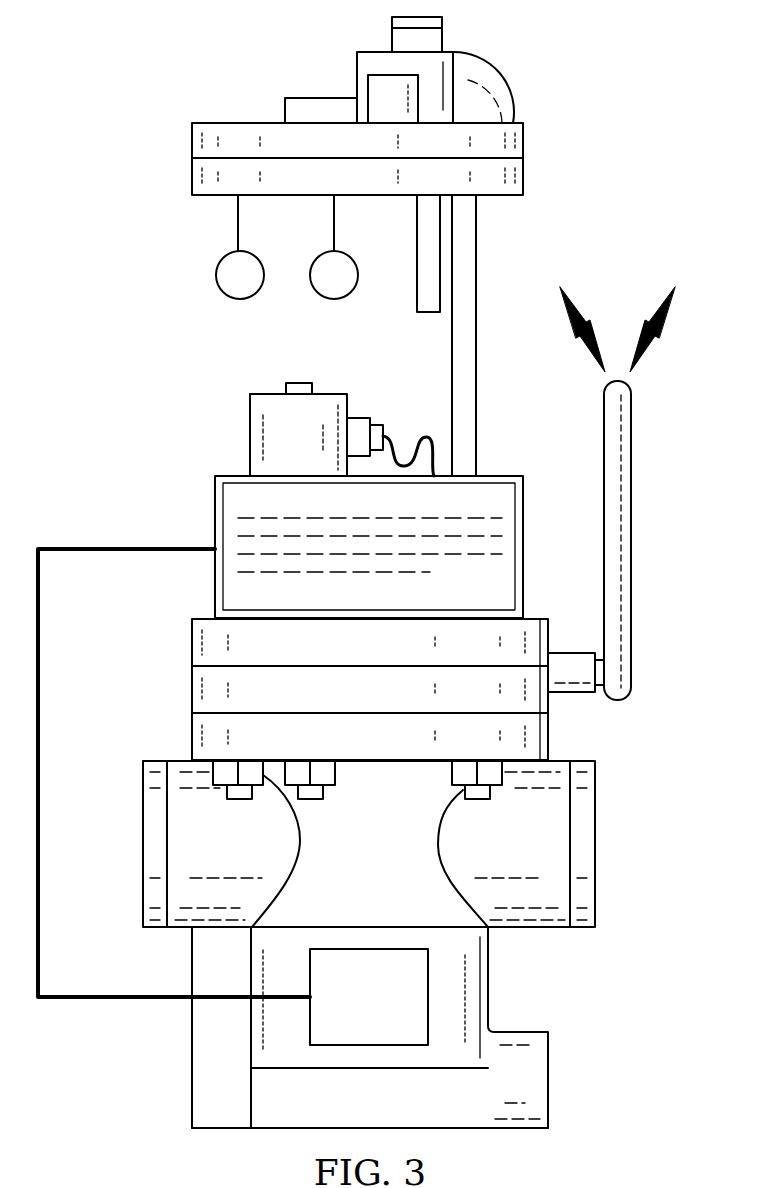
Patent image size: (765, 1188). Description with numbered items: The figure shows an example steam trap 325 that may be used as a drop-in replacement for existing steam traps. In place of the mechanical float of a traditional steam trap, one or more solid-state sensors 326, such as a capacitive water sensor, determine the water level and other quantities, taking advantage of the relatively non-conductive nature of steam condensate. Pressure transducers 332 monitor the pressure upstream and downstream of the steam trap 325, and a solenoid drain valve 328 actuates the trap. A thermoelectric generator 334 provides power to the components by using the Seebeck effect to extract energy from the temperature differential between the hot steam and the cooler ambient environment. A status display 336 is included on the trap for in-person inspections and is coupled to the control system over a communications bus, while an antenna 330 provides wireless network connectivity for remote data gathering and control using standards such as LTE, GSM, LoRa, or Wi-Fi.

The steam trap 325 is at (596, 840).
The solid-state sensors 326 is at (478, 253).
The solenoid drain valve 328 is at (249, 434).
The antenna 330 is at (632, 540).
The pressure transducers 332 is at (234, 298).
The thermoelectric generator 334 is at (346, 1030).
The status display 336 is at (215, 525).